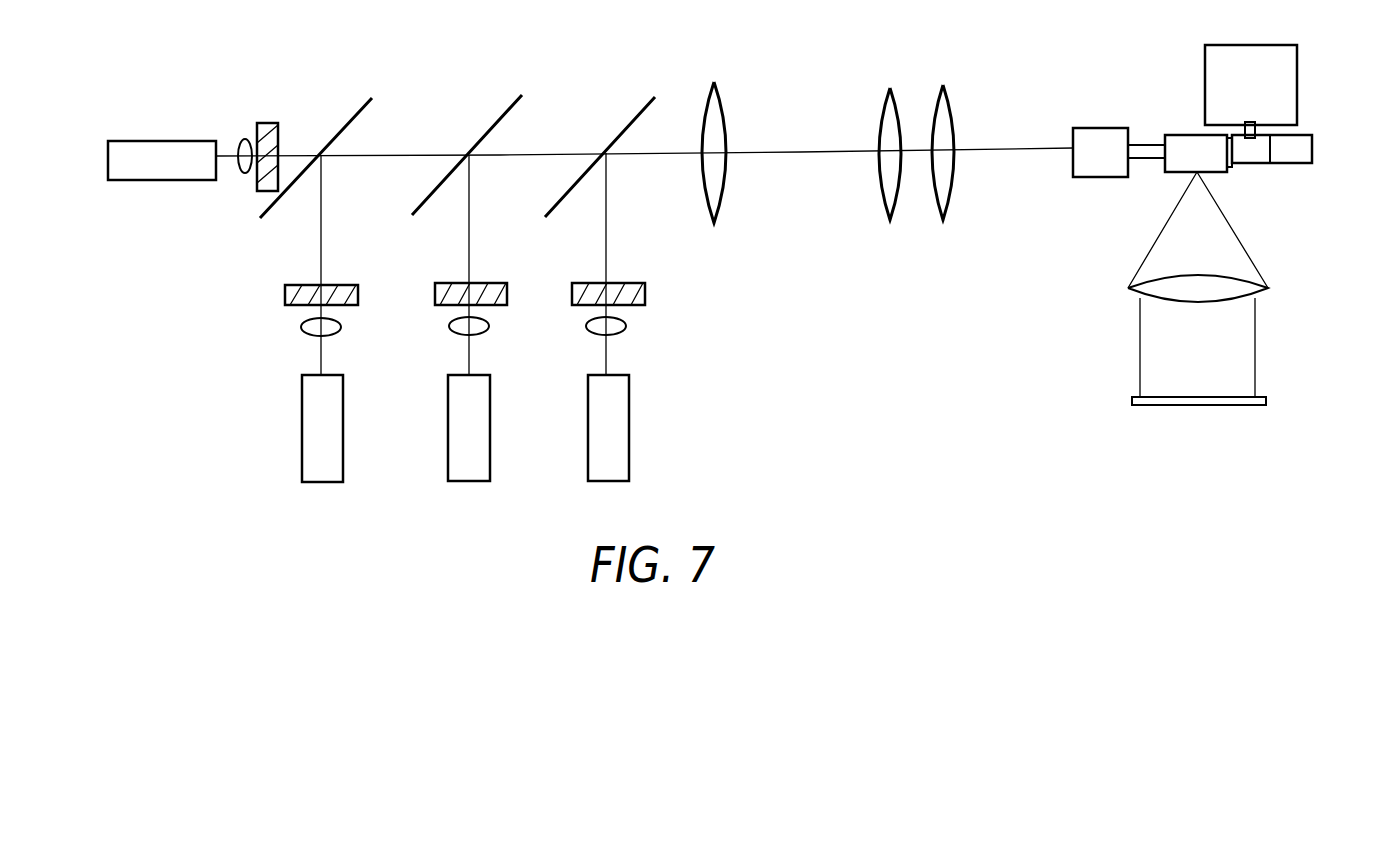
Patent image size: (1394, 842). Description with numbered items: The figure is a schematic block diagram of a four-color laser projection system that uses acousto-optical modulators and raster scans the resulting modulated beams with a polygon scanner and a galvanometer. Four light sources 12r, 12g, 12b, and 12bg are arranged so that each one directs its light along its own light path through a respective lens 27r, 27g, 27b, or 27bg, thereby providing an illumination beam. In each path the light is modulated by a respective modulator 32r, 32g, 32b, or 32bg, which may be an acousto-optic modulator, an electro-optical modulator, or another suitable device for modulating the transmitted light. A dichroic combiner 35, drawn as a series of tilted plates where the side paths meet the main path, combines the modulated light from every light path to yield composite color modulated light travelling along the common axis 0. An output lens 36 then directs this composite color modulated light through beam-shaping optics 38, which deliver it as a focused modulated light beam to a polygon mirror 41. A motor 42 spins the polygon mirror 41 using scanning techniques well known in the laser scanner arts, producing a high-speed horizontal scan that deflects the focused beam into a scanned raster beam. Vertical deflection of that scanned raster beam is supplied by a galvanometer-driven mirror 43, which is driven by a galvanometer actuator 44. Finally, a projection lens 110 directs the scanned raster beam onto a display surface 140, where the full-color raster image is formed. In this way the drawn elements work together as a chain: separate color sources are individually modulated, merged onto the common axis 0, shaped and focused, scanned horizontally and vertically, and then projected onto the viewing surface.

The common axis 0 is at (763, 153).
The light source 12bg is at (145, 141).
The lens 27bg is at (242, 143).
The modulator 32bg is at (268, 123).
The dichroic combiner 35 is at (672, 92).
The output lens 36 is at (712, 82).
The beam-shaping optics 38 is at (982, 60).
The galvanometer actuator 44 is at (1085, 128).
The galvanometer-driven mirror 43 is at (1183, 135).
The polygon mirror 41 is at (1312, 152).
The motor 42 is at (1297, 63).
The projection lens 110 is at (1268, 288).
The display surface 140 is at (1266, 400).
The modulator 32b is at (285, 290).
The lens 27b is at (342, 325).
The light source 12b is at (302, 443).
The modulator 32g is at (498, 283).
The lens 27g is at (490, 325).
The light source 12g is at (448, 447).
The modulator 32r is at (640, 283).
The lens 27r is at (625, 327).
The light source 12r is at (588, 447).